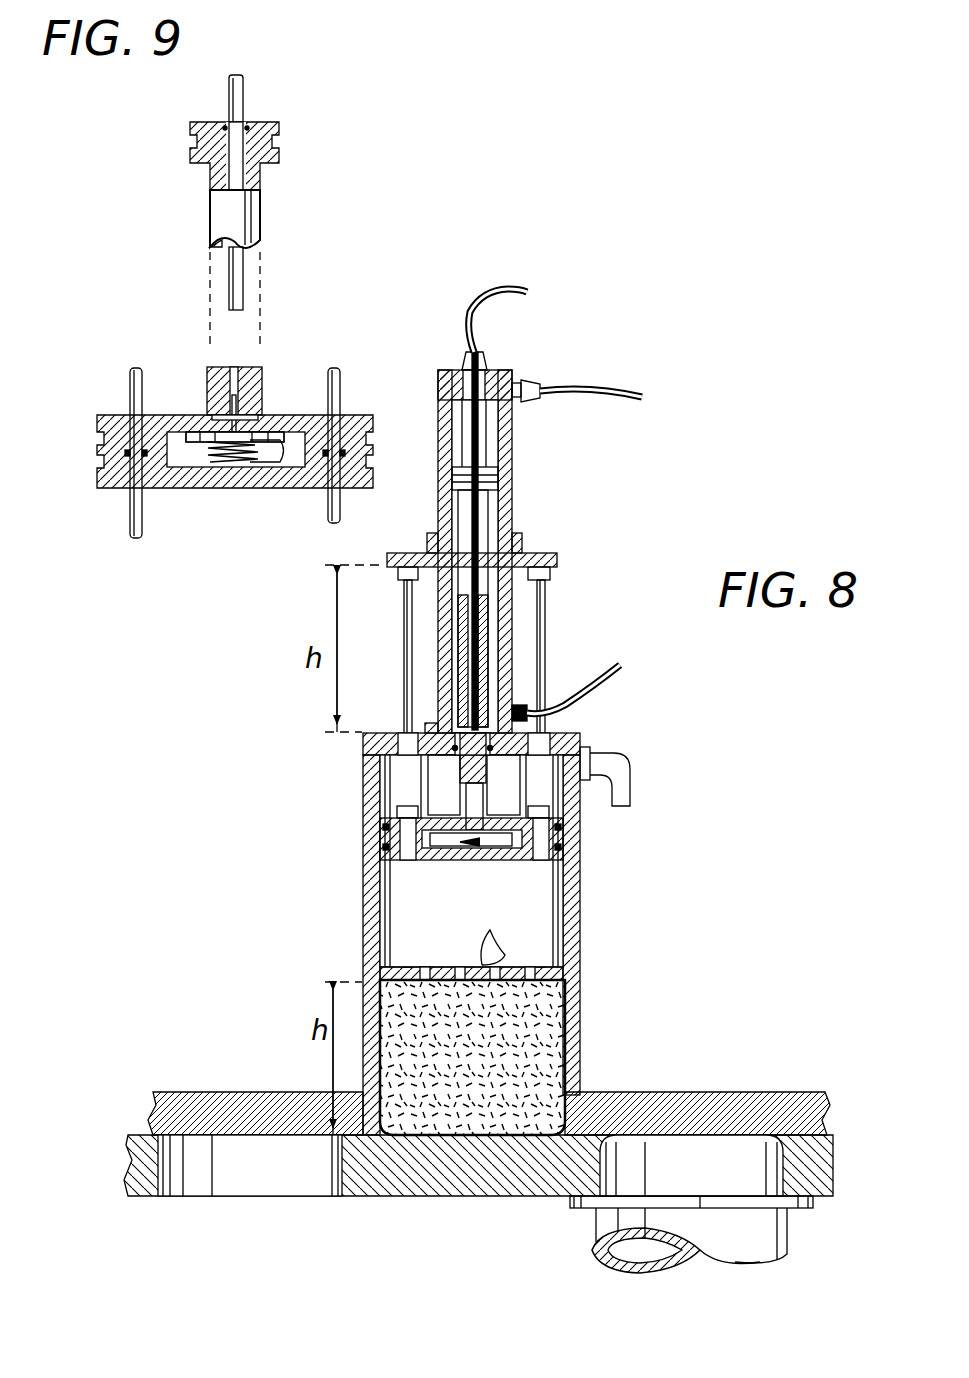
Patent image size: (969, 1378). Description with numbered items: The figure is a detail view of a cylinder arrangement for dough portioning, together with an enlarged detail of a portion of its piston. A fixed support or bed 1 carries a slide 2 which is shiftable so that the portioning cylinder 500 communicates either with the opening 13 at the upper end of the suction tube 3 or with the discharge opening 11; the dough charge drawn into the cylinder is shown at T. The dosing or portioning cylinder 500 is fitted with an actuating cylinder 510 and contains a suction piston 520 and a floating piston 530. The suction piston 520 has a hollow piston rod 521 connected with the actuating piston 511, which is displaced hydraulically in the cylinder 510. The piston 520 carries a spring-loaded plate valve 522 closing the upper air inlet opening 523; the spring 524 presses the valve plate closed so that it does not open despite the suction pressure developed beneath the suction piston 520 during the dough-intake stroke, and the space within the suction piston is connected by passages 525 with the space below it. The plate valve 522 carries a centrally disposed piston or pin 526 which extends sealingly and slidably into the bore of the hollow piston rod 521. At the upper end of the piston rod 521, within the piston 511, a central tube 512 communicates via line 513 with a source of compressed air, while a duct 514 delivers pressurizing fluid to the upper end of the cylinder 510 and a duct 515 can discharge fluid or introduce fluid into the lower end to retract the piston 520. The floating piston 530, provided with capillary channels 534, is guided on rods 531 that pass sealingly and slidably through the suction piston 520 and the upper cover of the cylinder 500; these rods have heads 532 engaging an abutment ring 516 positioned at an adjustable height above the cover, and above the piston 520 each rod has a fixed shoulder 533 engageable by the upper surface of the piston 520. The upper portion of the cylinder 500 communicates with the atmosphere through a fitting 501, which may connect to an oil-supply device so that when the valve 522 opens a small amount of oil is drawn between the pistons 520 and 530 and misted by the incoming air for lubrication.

In FIG. 8, the fixed support or bed 1 is at (125, 1168).
In FIG. 8, the slide 2 is at (797, 1090).
In FIG. 8, the suction tube 3 is at (590, 1251).
In FIG. 8, the discharge opening 11 is at (281, 1197).
In FIG. 8, the opening 13 is at (690, 1186).
In FIG. 8, the filled bag / tobacco charge T is at (548, 1053).
In FIG. 8, the portioning cylinder 500 is at (585, 917).
In FIG. 8, the fitting 501 is at (623, 797).
In FIG. 8, the actuating cylinder 510 is at (520, 506).
In FIG. 9, the actuating piston 511 is at (283, 155).
In FIG. 9, the tube 512 is at (246, 95).
In FIG. 8, the tube 512 is at (483, 452).
In FIG. 8, the line 513 is at (515, 285).
In FIG. 8, the duct 514 is at (620, 387).
In FIG. 8, the duct 515 is at (612, 690).
In FIG. 8, the abutment ring 516 is at (555, 561).
In FIG. 9, the suction piston 520 is at (228, 497).
In FIG. 8, the suction piston 520 is at (395, 875).
In FIG. 9, the hollow piston rod 521 is at (262, 215).
In FIG. 9, the plate valve 522 is at (262, 463).
In FIG. 9, the upper air inlet opening 523 is at (196, 432).
In FIG. 9, the spring 524 is at (262, 466).
In FIG. 9, the passages 525 is at (186, 488).
In FIG. 9, the piston or pin 526 is at (238, 412).
In FIG. 8, the floating piston 530 is at (392, 952).
In FIG. 8, the rods 531 is at (548, 650).
In FIG. 8, the heads 532 is at (400, 575).
In FIG. 8, the fixed shoulder 533 is at (395, 810).
In FIG. 8, the capillary channels 534 is at (495, 935).